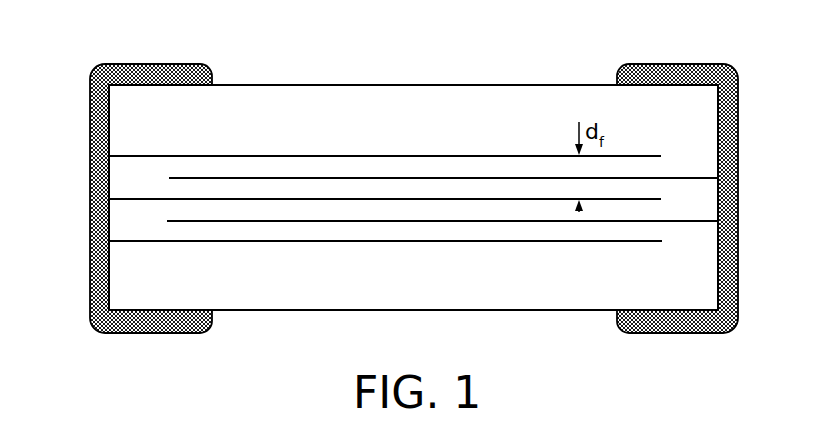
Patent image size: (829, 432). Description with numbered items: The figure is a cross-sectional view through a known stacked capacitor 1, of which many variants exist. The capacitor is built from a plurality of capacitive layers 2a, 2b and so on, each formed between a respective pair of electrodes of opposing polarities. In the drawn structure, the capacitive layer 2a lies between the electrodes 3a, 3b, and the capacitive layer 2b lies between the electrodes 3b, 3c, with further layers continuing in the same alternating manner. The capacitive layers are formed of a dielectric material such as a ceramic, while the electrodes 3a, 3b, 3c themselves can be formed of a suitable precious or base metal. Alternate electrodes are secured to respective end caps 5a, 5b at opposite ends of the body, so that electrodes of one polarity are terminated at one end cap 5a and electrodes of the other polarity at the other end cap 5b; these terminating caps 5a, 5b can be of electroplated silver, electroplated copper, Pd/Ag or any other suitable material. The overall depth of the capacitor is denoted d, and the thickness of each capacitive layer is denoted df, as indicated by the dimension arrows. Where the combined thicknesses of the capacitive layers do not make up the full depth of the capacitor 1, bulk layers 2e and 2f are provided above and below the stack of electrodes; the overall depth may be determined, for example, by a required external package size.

The multilayer ceramic capacitor 1 is at (582, 72).
The capacitive layer 2a is at (655, 167).
The capacitive layer 2b is at (655, 187).
The bulk layer 2e is at (419, 100).
The bulk layer 2f is at (545, 302).
The electrode 3a is at (140, 156).
The electrode 3b is at (182, 177).
The electrode 3c is at (140, 199).
The end cap 5a is at (157, 75).
The end cap 5b is at (682, 73).